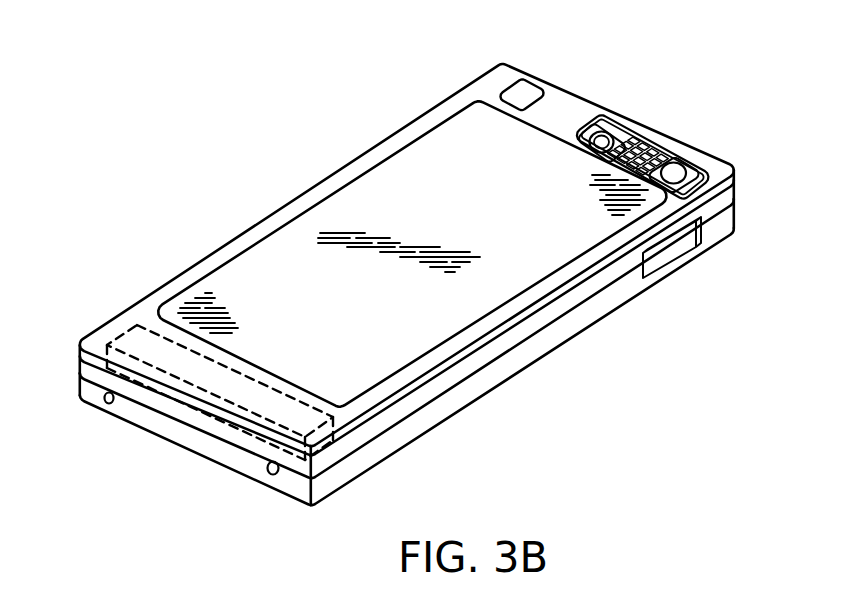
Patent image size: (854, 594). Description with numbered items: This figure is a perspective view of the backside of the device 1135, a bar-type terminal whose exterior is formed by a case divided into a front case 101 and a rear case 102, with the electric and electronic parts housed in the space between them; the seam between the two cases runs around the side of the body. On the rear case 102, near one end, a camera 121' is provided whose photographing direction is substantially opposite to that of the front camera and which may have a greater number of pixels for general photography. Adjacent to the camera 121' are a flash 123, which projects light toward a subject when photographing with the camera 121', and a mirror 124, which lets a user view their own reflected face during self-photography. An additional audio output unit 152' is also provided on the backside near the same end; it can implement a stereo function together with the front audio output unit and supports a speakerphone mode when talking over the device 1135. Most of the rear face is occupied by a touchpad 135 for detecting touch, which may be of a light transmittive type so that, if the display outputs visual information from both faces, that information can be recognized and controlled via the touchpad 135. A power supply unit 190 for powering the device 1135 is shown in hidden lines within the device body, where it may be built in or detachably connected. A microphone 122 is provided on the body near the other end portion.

The device 1135 is at (288, 113).
The additional audio output unit 152' is at (546, 68).
The camera 121' is at (622, 113).
The flash 123 is at (648, 132).
The mirror 124 is at (688, 151).
The rear case 102 is at (735, 197).
The front case 101 is at (733, 221).
The touchpad 135 is at (275, 262).
The power supply unit 190 is at (121, 324).
The microphone 122 is at (109, 405).